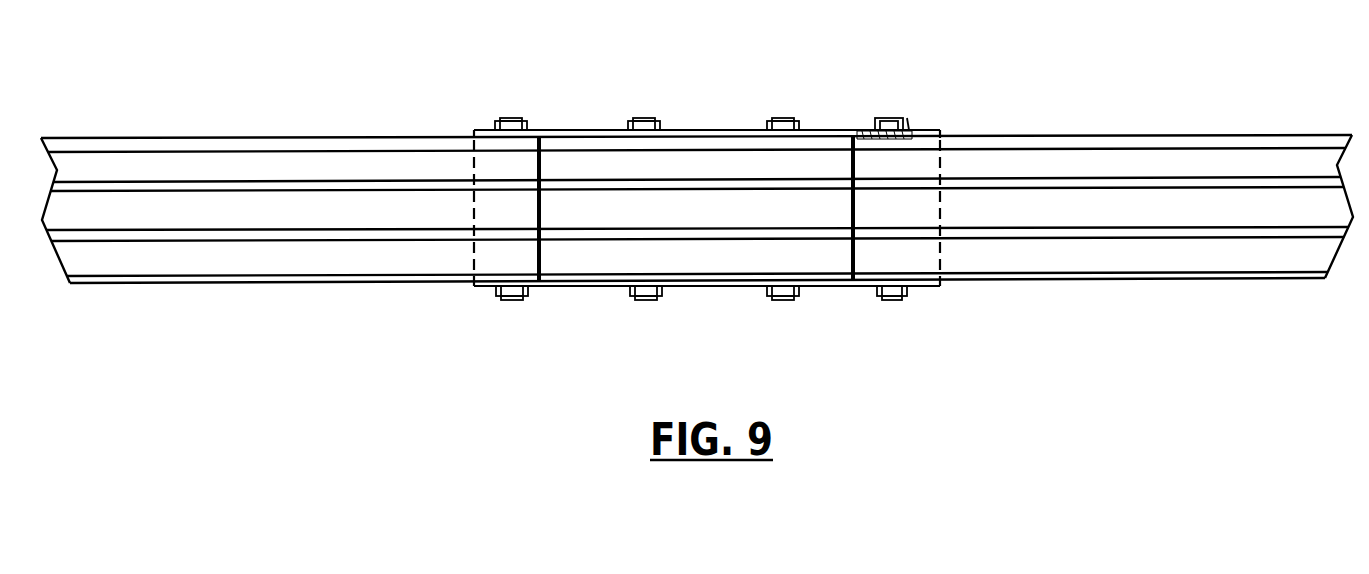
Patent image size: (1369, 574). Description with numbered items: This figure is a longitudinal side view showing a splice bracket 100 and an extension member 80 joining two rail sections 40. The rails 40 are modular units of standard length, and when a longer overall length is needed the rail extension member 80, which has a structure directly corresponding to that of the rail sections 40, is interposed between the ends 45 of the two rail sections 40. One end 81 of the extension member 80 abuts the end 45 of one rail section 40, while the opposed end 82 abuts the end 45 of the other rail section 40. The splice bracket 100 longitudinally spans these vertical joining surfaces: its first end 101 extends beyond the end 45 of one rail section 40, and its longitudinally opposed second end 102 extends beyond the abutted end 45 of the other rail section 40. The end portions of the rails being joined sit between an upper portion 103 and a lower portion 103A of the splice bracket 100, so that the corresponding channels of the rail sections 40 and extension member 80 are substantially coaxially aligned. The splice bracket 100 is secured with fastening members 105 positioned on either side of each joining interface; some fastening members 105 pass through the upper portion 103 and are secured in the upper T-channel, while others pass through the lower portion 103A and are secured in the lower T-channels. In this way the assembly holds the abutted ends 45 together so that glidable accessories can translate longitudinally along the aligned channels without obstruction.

The rail section 40 is at (331, 171).
The end of rail section 45 is at (537, 208).
The extension member 80 is at (684, 168).
The end of extension member 81 is at (541, 167).
The opposed end of extension member 82 is at (852, 245).
The splice bracket 100 is at (712, 214).
The first end of splice bracket 101 is at (470, 213).
The second end of splice bracket 102 is at (940, 210).
The upper portion of splice bracket 103 is at (813, 130).
The lower portion of splice bracket 103A is at (550, 288).
The fastening member 105 is at (890, 118).